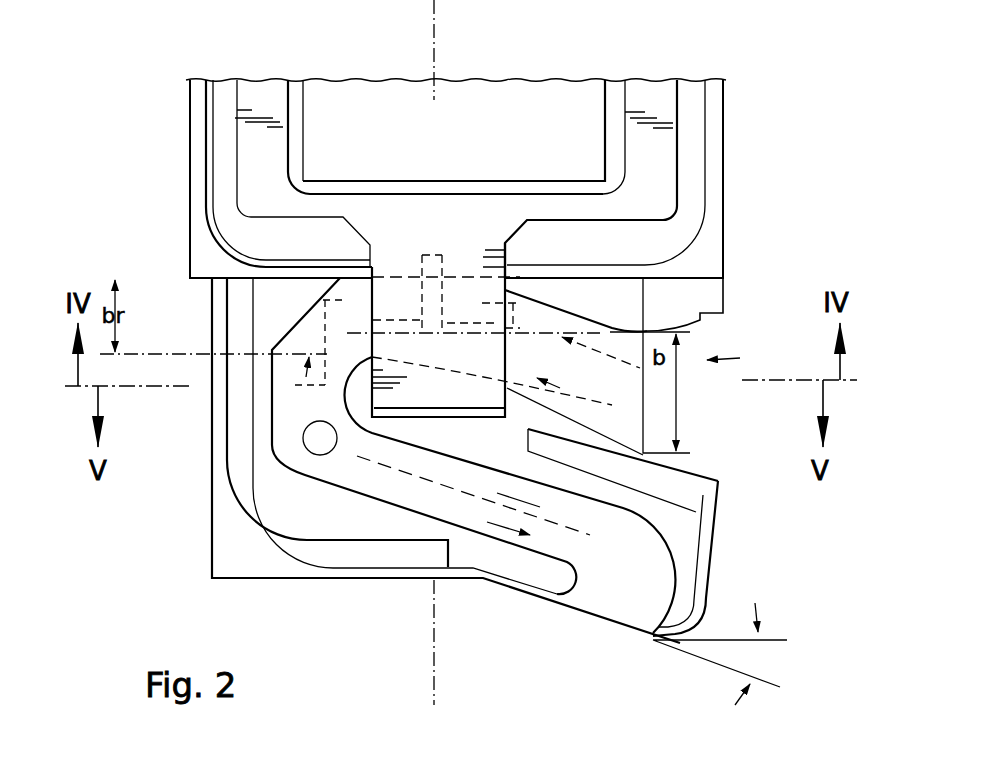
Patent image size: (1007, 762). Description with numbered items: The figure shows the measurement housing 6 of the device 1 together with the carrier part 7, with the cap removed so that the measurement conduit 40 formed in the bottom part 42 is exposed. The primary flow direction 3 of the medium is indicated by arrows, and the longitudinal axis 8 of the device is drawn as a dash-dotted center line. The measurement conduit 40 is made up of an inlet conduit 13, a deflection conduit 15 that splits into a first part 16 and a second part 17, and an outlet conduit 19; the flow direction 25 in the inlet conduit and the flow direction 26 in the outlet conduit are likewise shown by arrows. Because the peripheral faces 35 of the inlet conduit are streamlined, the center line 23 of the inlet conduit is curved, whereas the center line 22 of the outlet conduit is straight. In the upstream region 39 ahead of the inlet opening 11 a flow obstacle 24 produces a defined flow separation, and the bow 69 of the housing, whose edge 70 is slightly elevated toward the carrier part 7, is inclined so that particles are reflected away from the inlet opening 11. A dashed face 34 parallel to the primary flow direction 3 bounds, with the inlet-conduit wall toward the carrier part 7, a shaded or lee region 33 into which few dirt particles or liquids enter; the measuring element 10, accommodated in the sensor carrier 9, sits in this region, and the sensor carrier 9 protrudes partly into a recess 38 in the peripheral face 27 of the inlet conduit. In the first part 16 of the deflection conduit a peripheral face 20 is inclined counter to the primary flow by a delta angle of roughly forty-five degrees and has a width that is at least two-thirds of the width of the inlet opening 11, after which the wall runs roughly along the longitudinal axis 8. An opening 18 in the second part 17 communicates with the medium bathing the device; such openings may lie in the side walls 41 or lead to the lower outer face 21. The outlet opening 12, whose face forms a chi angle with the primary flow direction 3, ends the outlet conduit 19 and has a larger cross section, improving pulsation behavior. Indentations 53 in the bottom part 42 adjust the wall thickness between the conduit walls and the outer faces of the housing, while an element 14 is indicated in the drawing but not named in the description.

The device 1 is at (190, 145).
The primary flow direction 3 is at (742, 345).
The measurement housing 6 is at (203, 580).
The carrier part 7 is at (725, 178).
The longitudinal axis 8 is at (437, 46).
The sensor carrier 9 is at (388, 292).
The measuring element 10 is at (442, 255).
The inlet opening 11 is at (643, 398).
The outlet opening 12 is at (610, 627).
The inlet conduit 13 is at (633, 412).
The chamfer edge 14 is at (368, 325).
The deflection conduit 15 is at (287, 366).
The first part of the deflection conduit 16 is at (287, 337).
The second part of the deflection conduit 17 is at (283, 445).
The opening 18 is at (315, 442).
The outlet conduit 19 is at (410, 500).
The peripheral face 20 is at (297, 322).
The lower outer face 21 is at (495, 580).
The center line of the outlet conduit 22 is at (460, 500).
The center line of the inlet conduit 23 is at (460, 333).
The flow obstacle 24 is at (713, 320).
The flow direction in the inlet conduit 25 is at (557, 383).
The flow direction in the outlet conduit 26 is at (492, 520).
The peripheral face of the inlet conduit 27 is at (420, 367).
The shaded or lee region 33 is at (523, 312).
The face 34 is at (550, 314).
The peripheral faces of the inlet conduit 35 is at (555, 330).
The recess 38 is at (408, 417).
The upstream region 39 is at (693, 422).
The measurement conduit 40 is at (670, 457).
The side walls 41 is at (283, 400).
The bottom part 42 is at (300, 580).
The indentations 53 is at (693, 500).
The bow 69 is at (717, 538).
The edge of the bow 70 is at (717, 480).